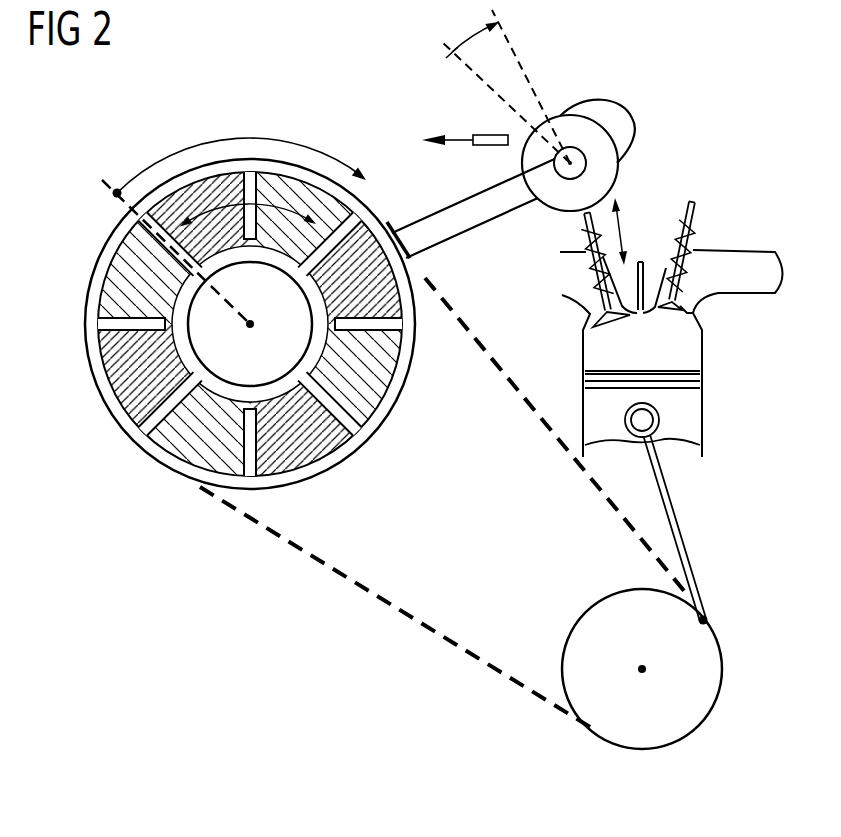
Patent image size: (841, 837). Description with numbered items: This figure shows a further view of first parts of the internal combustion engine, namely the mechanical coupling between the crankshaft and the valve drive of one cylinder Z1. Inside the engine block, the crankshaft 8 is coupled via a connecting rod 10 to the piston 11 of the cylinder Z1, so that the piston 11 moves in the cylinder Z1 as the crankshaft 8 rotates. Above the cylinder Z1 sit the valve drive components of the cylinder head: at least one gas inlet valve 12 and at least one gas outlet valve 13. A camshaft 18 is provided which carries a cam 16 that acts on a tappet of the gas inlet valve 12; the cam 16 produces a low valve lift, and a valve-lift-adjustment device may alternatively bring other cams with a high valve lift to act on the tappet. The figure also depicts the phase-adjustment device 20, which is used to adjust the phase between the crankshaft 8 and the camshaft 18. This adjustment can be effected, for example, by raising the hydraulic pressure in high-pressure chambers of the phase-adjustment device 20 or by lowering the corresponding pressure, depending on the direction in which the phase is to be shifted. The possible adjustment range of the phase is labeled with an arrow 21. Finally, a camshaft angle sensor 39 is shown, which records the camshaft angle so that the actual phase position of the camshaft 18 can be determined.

The crankshaft 8 is at (713, 677).
The connecting rod 10 is at (681, 547).
The piston 11 is at (692, 414).
The cylinder Z1 is at (690, 353).
The gas inlet valve 12 is at (596, 292).
The gas outlet valve 13 is at (697, 223).
The cam 16 is at (593, 113).
The camshaft 18 is at (470, 231).
The phase-adjustment device 20 is at (88, 323).
The arrow 21 is at (233, 141).
The camshaft angle sensor 39 is at (487, 137).